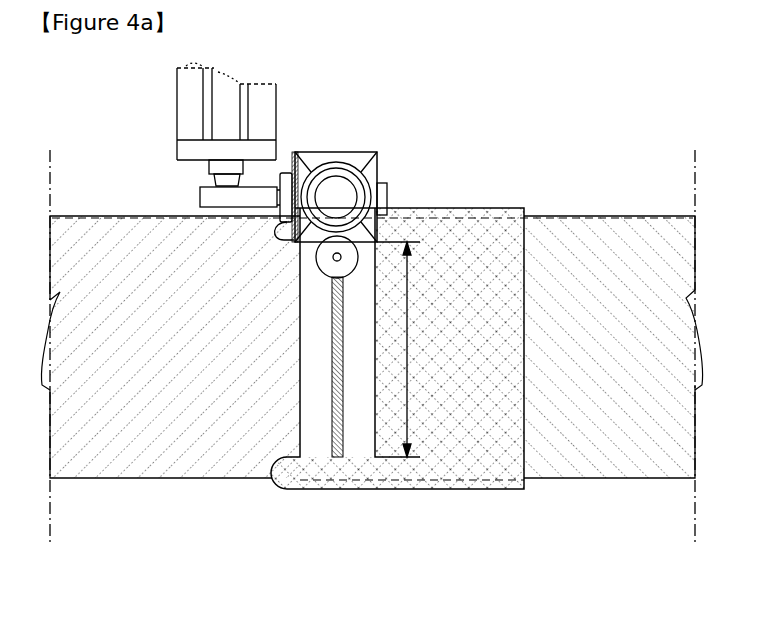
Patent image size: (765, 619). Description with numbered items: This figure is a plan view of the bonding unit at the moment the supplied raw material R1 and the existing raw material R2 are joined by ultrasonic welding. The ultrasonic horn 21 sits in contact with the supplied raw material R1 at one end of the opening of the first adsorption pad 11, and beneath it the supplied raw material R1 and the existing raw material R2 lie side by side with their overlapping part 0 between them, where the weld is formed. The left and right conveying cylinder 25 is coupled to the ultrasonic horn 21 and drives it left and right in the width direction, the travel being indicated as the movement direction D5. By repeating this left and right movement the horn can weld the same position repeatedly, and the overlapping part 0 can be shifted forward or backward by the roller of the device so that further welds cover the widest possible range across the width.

The left and right conveying cylinder 25 is at (189, 121).
The ultrasonic horn 21 is at (337, 250).
The first adsorption pad 11 is at (274, 479).
The overlapping part of supplied raw material and existing raw material 0 is at (318, 447).
The movement direction of ultrasonic horn D5 is at (417, 349).
The supplied raw material R1 is at (609, 468).
The existing raw material R2 is at (117, 470).